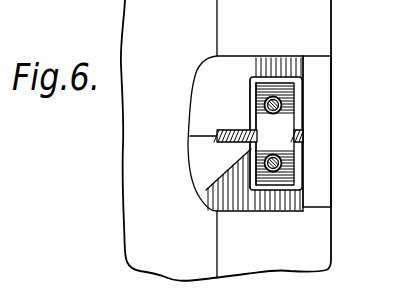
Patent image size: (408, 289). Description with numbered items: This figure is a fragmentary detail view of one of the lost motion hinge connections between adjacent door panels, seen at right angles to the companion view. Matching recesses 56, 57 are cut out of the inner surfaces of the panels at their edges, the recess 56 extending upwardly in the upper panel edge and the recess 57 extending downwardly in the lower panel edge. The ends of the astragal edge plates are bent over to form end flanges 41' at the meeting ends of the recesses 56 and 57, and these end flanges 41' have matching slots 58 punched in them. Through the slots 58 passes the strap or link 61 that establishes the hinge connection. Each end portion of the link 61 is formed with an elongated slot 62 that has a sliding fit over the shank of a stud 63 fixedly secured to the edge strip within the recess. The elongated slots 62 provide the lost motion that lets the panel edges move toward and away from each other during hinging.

The end flange 41' is at (301, 129).
The recess 56 is at (303, 80).
The recess 57 is at (302, 190).
The slot 58 is at (252, 122).
The link 61 is at (284, 143).
The elongated slot 62 is at (273, 96).
The stud 63 is at (257, 105).